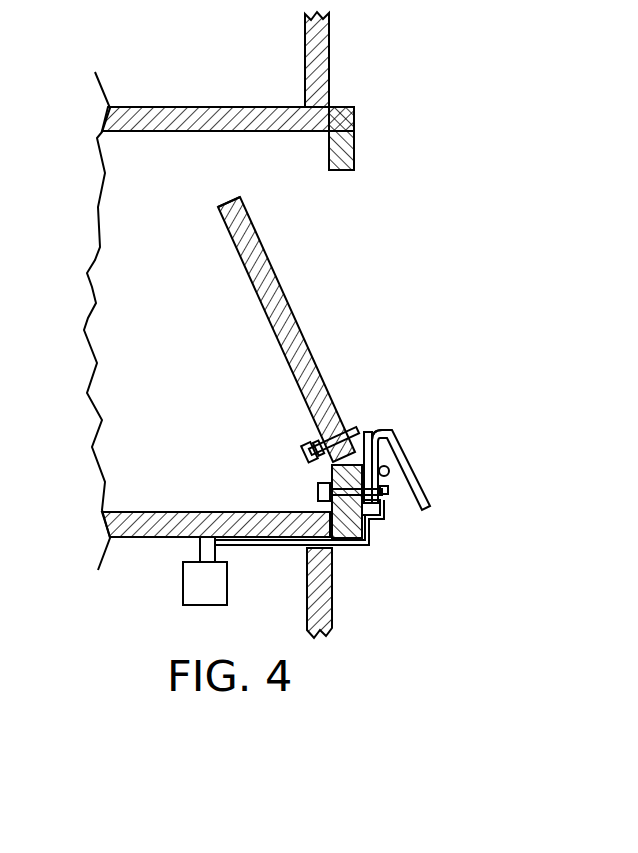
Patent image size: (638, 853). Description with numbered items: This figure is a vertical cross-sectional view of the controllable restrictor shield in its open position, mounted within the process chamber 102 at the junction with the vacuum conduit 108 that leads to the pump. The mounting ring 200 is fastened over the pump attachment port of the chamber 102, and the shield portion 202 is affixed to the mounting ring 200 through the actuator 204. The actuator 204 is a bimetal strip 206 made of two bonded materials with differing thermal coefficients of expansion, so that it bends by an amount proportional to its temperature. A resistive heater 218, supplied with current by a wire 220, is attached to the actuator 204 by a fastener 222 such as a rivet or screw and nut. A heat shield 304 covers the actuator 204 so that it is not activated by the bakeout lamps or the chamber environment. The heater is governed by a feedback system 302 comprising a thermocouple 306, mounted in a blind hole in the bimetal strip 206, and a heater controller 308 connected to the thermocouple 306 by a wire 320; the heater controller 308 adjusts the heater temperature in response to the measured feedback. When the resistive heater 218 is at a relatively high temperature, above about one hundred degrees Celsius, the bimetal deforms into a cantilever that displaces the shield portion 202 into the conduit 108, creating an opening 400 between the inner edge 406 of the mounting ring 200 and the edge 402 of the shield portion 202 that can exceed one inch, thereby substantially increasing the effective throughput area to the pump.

The chamber 102 is at (305, 48).
The vacuum conduit 108 is at (146, 113).
The mounting ring 200 is at (355, 140).
The shield portion 202 is at (275, 280).
The actuator 204 is at (434, 528).
The bimetal strip 206 is at (342, 430).
The resistive heater 218 is at (392, 472).
The wire 220 is at (220, 552).
The fastener 222 is at (390, 490).
The feedback system 302 is at (145, 650).
The heat shield 304 is at (405, 447).
The thermocouple 306 is at (380, 430).
The heater controller 308 is at (190, 606).
The wire 320 is at (200, 550).
The opening 400 is at (322, 164).
The edge 402 is at (215, 198).
The inner edge 406 is at (352, 170).